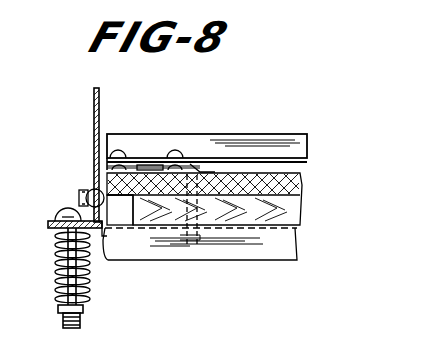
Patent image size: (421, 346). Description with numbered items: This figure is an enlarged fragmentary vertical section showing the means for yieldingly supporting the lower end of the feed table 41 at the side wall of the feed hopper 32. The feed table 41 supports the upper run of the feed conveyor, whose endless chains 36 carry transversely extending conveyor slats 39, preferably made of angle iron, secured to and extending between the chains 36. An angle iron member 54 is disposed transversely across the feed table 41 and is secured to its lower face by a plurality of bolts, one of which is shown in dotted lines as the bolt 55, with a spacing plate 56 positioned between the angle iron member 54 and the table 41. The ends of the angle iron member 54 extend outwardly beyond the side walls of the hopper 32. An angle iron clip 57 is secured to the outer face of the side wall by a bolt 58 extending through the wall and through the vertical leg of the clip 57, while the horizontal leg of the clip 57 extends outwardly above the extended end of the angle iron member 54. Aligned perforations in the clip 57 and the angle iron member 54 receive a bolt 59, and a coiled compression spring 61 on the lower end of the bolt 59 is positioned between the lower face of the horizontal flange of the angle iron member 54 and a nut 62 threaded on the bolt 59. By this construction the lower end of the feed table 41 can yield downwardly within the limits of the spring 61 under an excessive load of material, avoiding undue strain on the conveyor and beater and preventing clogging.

The feed hopper 32 is at (94, 116).
The endless chains 36 is at (118, 163).
The conveyor slats 39 is at (168, 143).
The feed table 41 is at (300, 190).
The angle iron member 54 is at (137, 245).
The bolt 55 is at (205, 247).
The spacing plate 56 is at (296, 229).
The angle iron clip 57 is at (60, 220).
The bolt 58 is at (100, 212).
The bolt 59 is at (67, 210).
The coiled compression spring 61 is at (58, 262).
The nut 62 is at (83, 310).